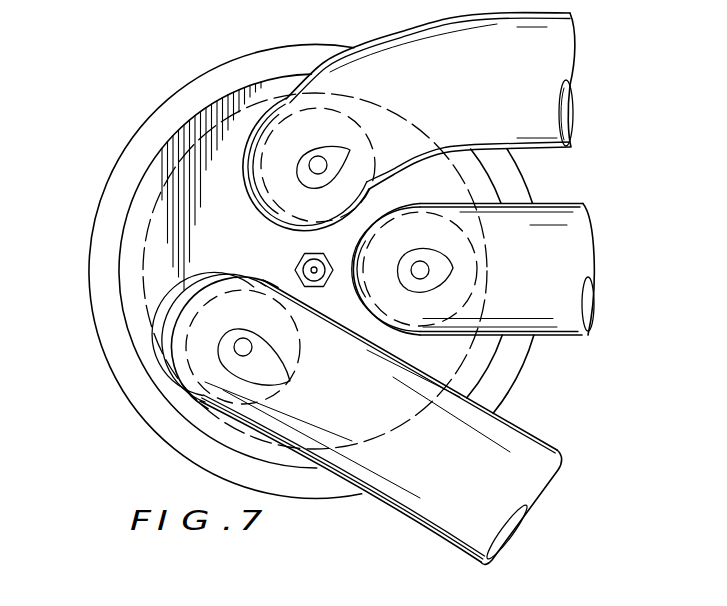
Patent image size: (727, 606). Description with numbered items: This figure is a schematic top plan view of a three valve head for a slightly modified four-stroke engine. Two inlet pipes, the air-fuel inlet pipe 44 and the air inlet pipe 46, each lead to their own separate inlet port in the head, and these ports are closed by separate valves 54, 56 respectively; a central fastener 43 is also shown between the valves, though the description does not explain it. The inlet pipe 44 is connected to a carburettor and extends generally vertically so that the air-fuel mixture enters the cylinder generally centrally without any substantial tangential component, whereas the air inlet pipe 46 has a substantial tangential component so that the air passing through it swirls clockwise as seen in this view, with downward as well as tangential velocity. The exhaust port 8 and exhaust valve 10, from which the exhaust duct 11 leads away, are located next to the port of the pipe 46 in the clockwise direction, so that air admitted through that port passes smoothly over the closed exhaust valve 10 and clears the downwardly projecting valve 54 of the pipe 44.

The exhaust port 8 is at (273, 196).
The exhaust valve 10 is at (320, 164).
The exhaust duct 11 is at (537, 89).
The hex nut 43 is at (296, 262).
The inlet pipe 44 is at (565, 237).
The air inlet pipe 46 is at (437, 507).
The valve 54 is at (424, 272).
The valve 56 is at (247, 348).